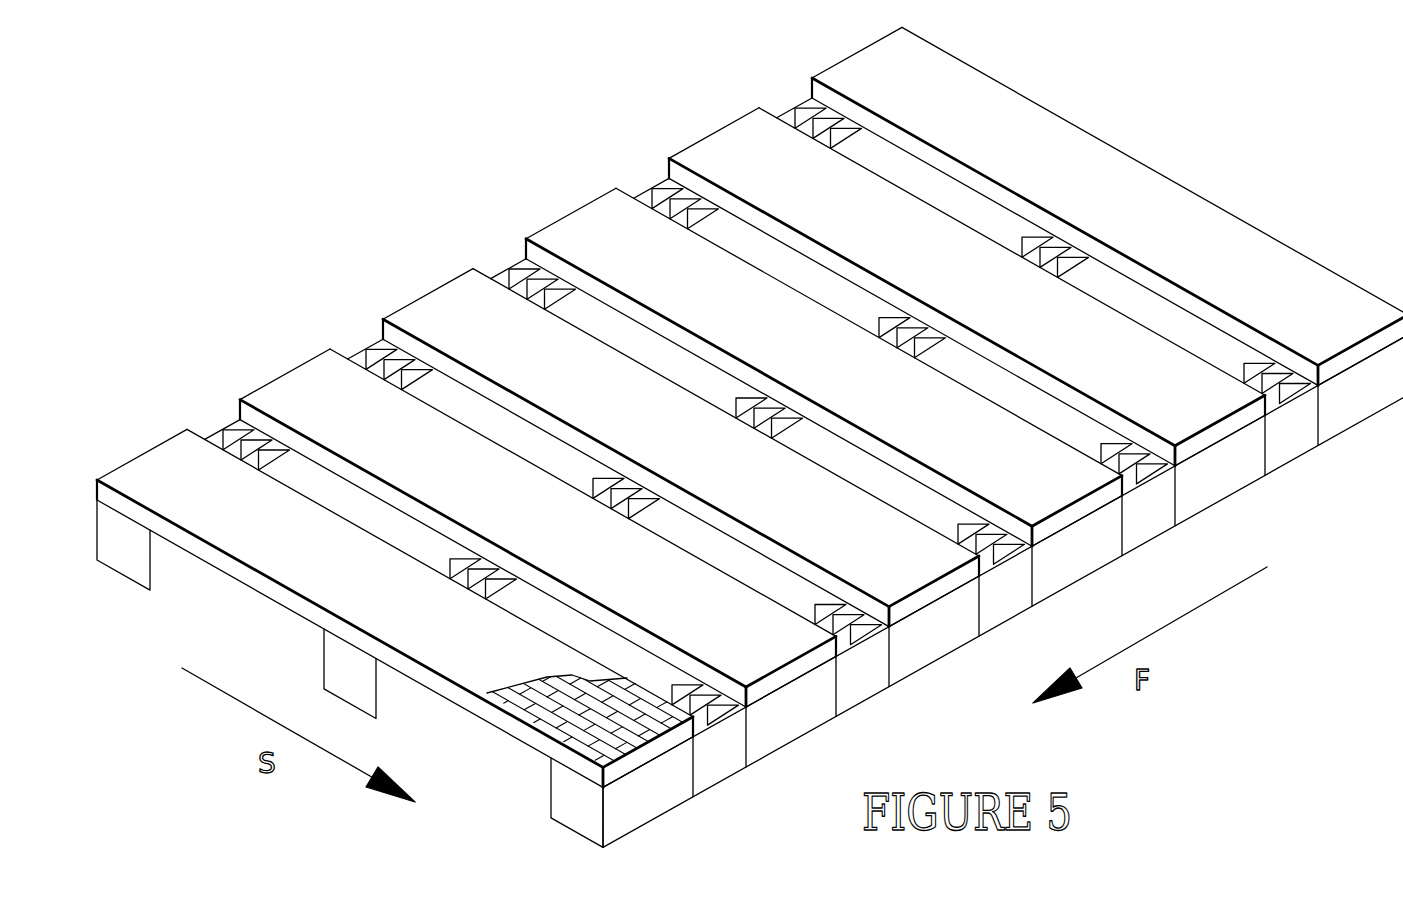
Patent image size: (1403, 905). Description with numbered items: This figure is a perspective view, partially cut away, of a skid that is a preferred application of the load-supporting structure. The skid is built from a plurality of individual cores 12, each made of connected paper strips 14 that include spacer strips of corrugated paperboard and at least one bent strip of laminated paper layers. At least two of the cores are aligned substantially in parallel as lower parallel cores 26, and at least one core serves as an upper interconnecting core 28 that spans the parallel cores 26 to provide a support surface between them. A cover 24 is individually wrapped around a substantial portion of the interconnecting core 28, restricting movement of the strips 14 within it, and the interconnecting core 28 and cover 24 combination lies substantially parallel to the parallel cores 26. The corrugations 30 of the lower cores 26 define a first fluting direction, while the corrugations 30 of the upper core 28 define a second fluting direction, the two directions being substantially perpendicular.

The core 12 is at (750, 397).
The connected strips 14 is at (543, 288).
The cover 24 is at (488, 660).
The parallel cores 26 is at (138, 558).
The interconnecting core 28 is at (518, 728).
The corrugations 30 is at (623, 767).